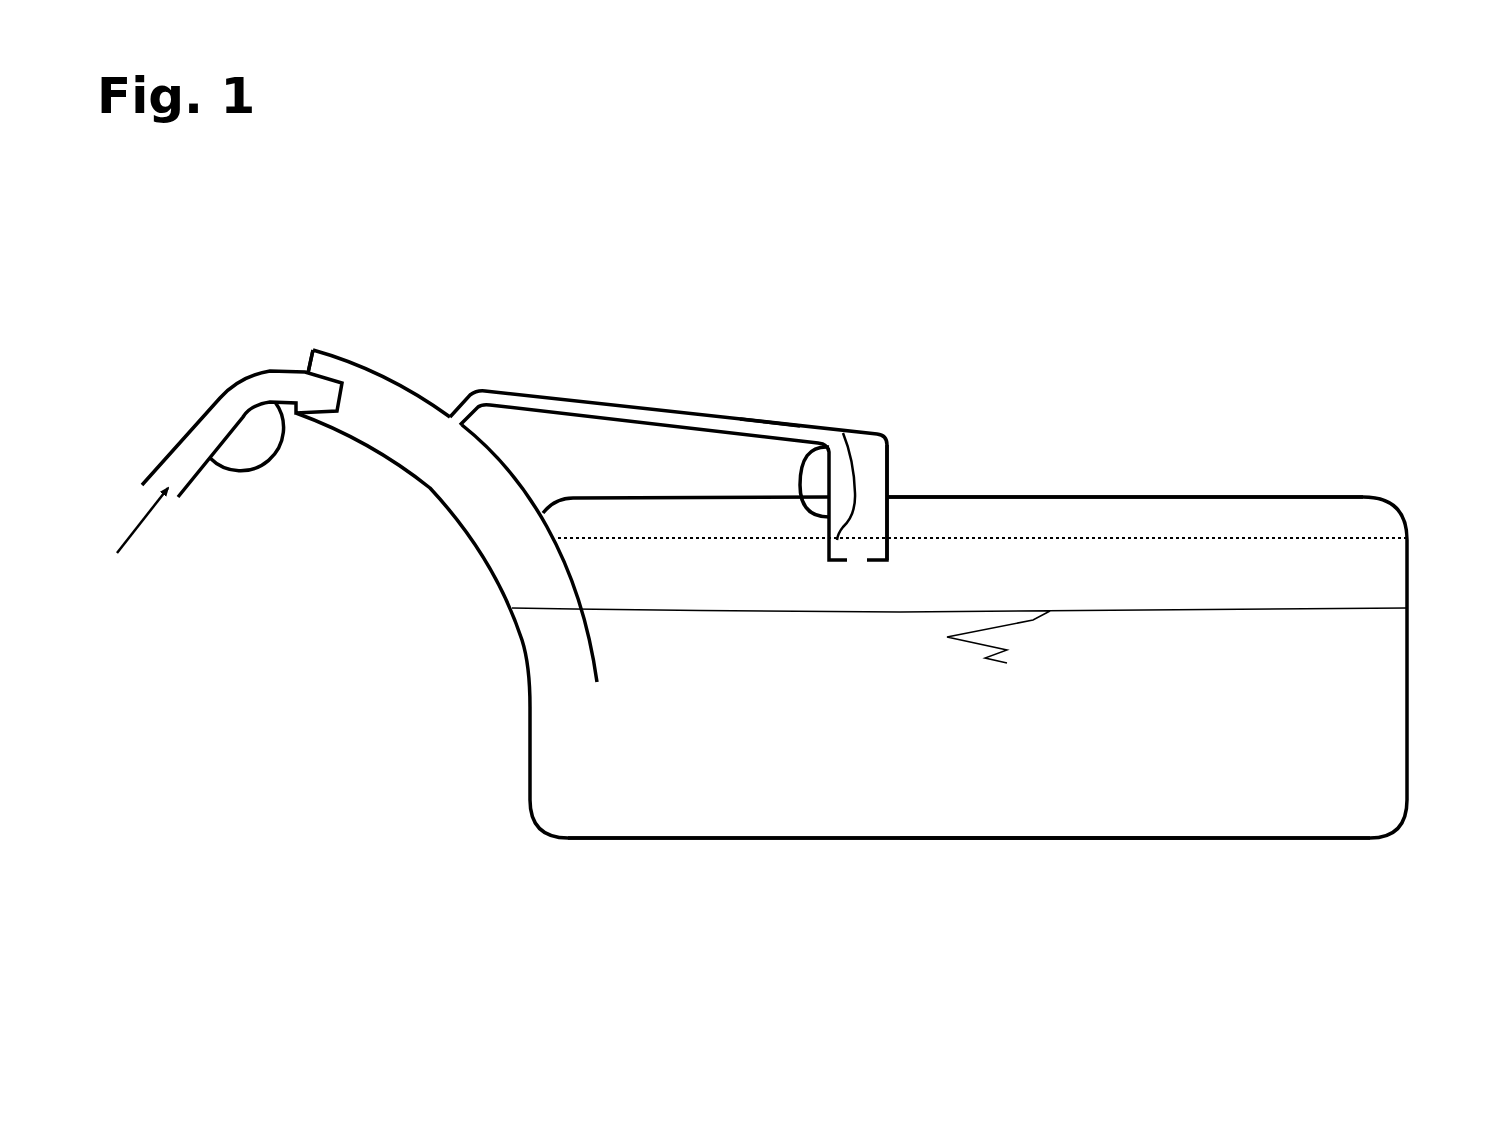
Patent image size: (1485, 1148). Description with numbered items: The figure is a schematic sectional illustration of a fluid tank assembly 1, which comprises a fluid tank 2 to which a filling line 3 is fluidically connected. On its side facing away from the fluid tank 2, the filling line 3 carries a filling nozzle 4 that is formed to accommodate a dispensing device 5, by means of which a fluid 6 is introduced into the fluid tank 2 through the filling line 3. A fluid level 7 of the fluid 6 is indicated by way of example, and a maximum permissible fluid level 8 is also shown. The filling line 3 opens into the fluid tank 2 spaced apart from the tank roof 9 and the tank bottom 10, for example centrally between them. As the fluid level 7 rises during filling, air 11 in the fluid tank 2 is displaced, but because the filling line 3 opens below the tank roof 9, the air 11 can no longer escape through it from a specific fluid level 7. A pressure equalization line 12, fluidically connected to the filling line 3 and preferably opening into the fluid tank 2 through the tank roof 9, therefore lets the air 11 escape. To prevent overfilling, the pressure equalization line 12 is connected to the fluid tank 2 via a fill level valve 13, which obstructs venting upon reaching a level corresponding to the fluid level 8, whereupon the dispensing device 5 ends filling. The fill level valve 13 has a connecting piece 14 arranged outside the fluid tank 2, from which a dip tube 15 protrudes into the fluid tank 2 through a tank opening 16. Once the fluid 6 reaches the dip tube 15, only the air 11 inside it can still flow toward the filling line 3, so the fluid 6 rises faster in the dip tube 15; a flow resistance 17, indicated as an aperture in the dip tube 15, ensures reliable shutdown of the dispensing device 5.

The fluid tank assembly 1 is at (1101, 314).
The fluid tank 2 is at (1386, 486).
The filling line 3 is at (385, 457).
The filling nozzle 4 is at (305, 368).
The dispensing device 5 is at (203, 392).
The fluid 6 is at (920, 813).
The fluid level 7 is at (1257, 605).
The maximum permissible fluid level 8 is at (1177, 533).
The tank roof 9 is at (1008, 497).
The tank bottom 10 is at (1012, 834).
The air 11 is at (1082, 523).
The pressure equalization line 12 is at (560, 407).
The fill level valve 13 is at (906, 521).
The connecting piece 14 is at (757, 425).
The dip tube 15 is at (810, 445).
The tank opening 16 is at (892, 497).
The flow resistance 17 is at (843, 433).